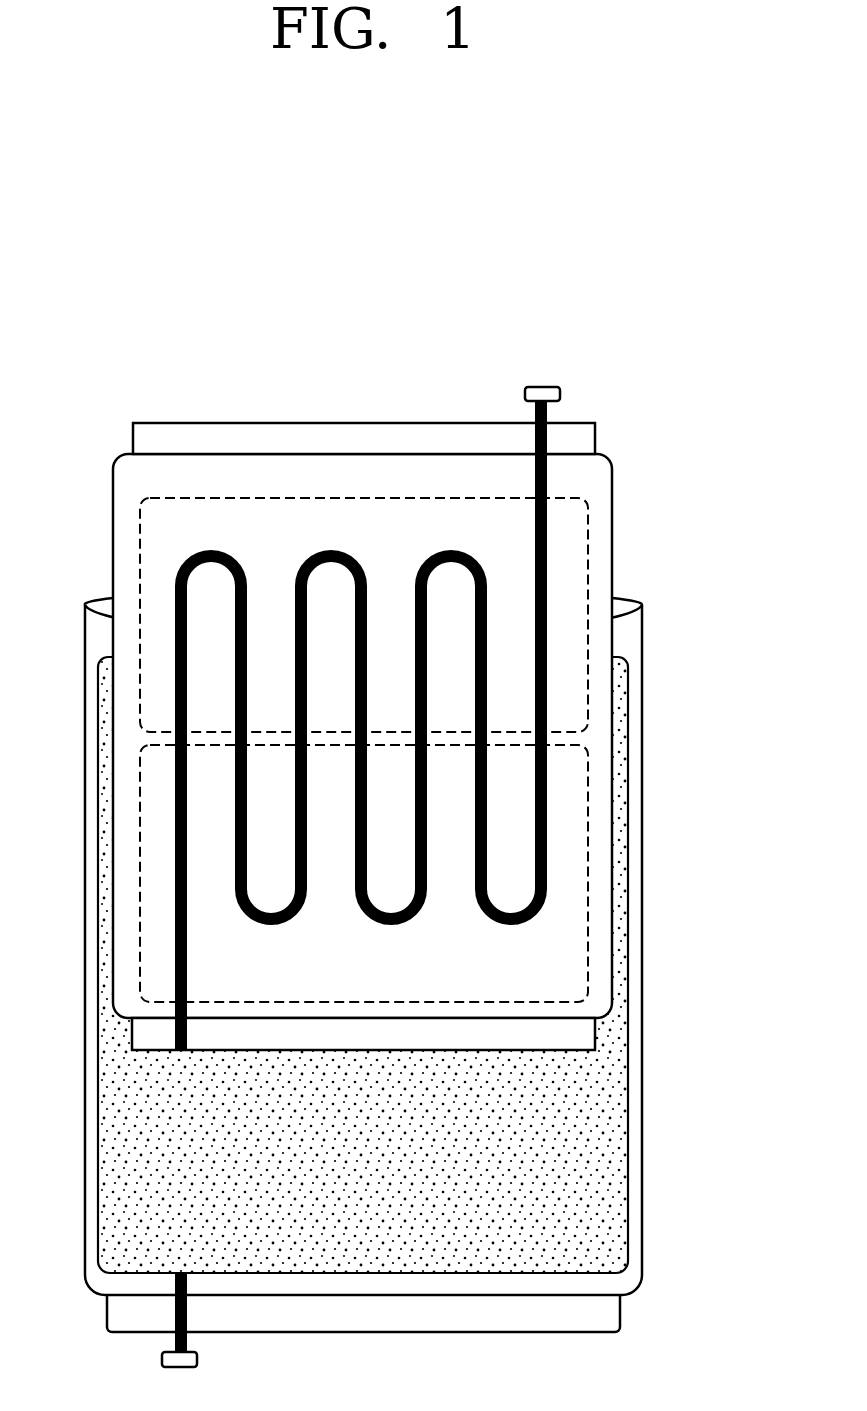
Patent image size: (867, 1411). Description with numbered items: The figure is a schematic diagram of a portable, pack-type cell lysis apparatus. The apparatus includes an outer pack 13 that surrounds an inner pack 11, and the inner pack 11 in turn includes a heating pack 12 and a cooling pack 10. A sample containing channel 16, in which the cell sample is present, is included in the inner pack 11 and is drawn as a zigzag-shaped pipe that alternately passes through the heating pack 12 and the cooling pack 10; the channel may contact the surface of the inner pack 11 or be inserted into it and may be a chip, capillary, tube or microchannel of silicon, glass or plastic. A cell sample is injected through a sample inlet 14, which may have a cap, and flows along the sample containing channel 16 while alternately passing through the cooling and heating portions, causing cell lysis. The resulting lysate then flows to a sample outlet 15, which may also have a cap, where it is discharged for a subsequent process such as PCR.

The cooling pack 10 is at (410, 732).
The inner pack 11 is at (600, 467).
The heating pack 12 is at (588, 529).
The outer pack 13 is at (642, 685).
The sample inlet 14 is at (560, 394).
The sample outlet 15 is at (162, 1358).
The sample containing channel 16 is at (546, 803).